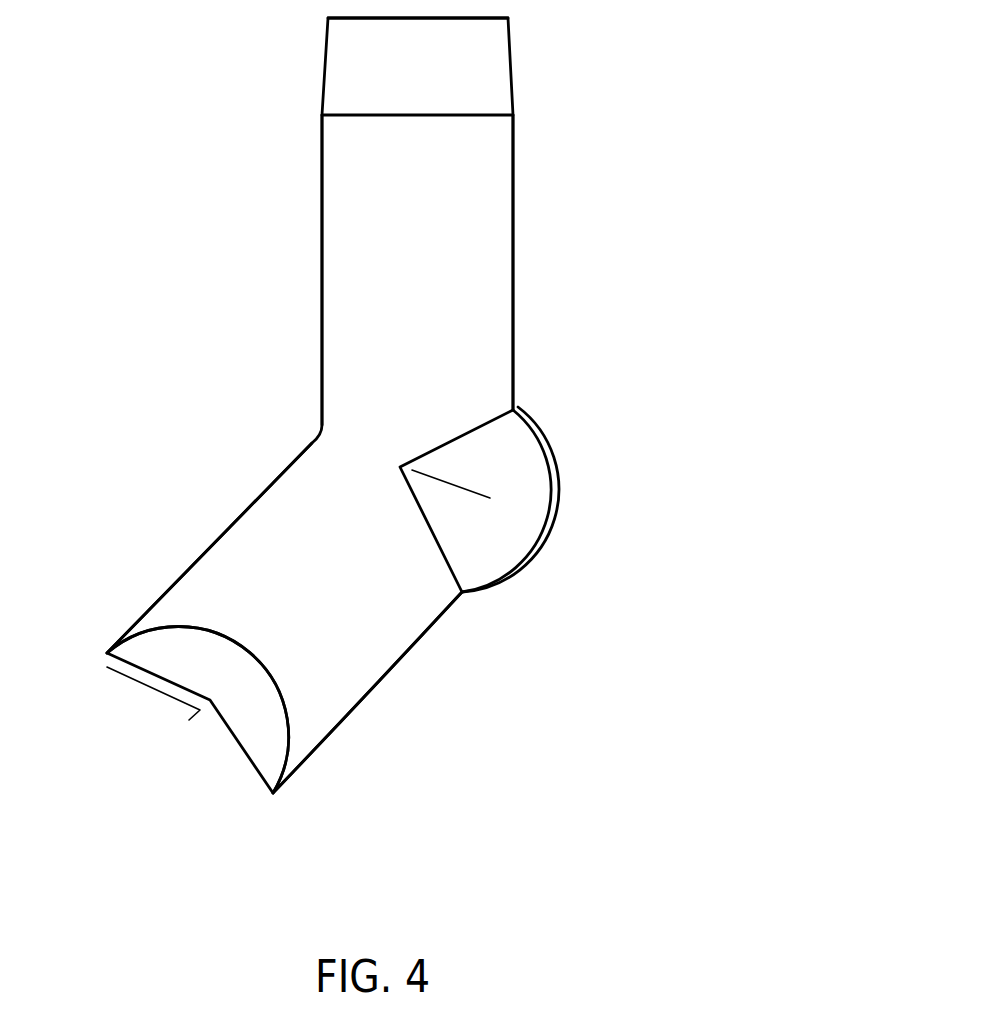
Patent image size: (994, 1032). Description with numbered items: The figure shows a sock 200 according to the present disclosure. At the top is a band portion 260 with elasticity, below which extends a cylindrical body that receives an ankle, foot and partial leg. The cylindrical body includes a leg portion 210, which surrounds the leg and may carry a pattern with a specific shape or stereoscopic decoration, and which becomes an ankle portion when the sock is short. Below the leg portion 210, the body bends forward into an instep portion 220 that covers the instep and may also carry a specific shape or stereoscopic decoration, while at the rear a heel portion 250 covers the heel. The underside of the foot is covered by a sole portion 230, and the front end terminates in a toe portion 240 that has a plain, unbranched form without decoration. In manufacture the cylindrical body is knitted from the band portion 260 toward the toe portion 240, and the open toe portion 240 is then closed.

The sock 200 is at (289, 288).
The leg portion 210 is at (473, 262).
The instep portion 220 is at (244, 549).
The sole portion 230 is at (366, 640).
The toe portion 240 is at (146, 775).
The heel portion 250 is at (516, 506).
The band portion 260 is at (473, 67).